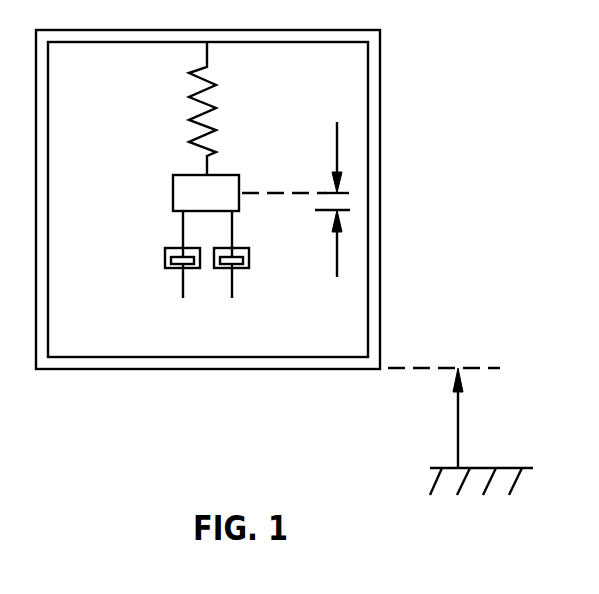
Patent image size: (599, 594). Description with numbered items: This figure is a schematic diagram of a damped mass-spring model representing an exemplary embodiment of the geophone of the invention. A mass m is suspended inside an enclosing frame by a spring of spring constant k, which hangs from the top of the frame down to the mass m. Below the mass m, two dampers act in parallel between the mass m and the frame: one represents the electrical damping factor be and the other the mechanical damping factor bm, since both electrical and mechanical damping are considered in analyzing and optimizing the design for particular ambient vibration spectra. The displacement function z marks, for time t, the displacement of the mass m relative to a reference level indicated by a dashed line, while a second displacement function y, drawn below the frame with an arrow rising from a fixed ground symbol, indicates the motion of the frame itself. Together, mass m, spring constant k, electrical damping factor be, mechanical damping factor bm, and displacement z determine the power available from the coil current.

The spring constant k is at (187, 108).
The mass m is at (206, 193).
The electrical damping factor be is at (161, 254).
The mechanical damping factor bm is at (255, 254).
The displacement function z is at (304, 185).
The base displacement y(t) y is at (460, 431).